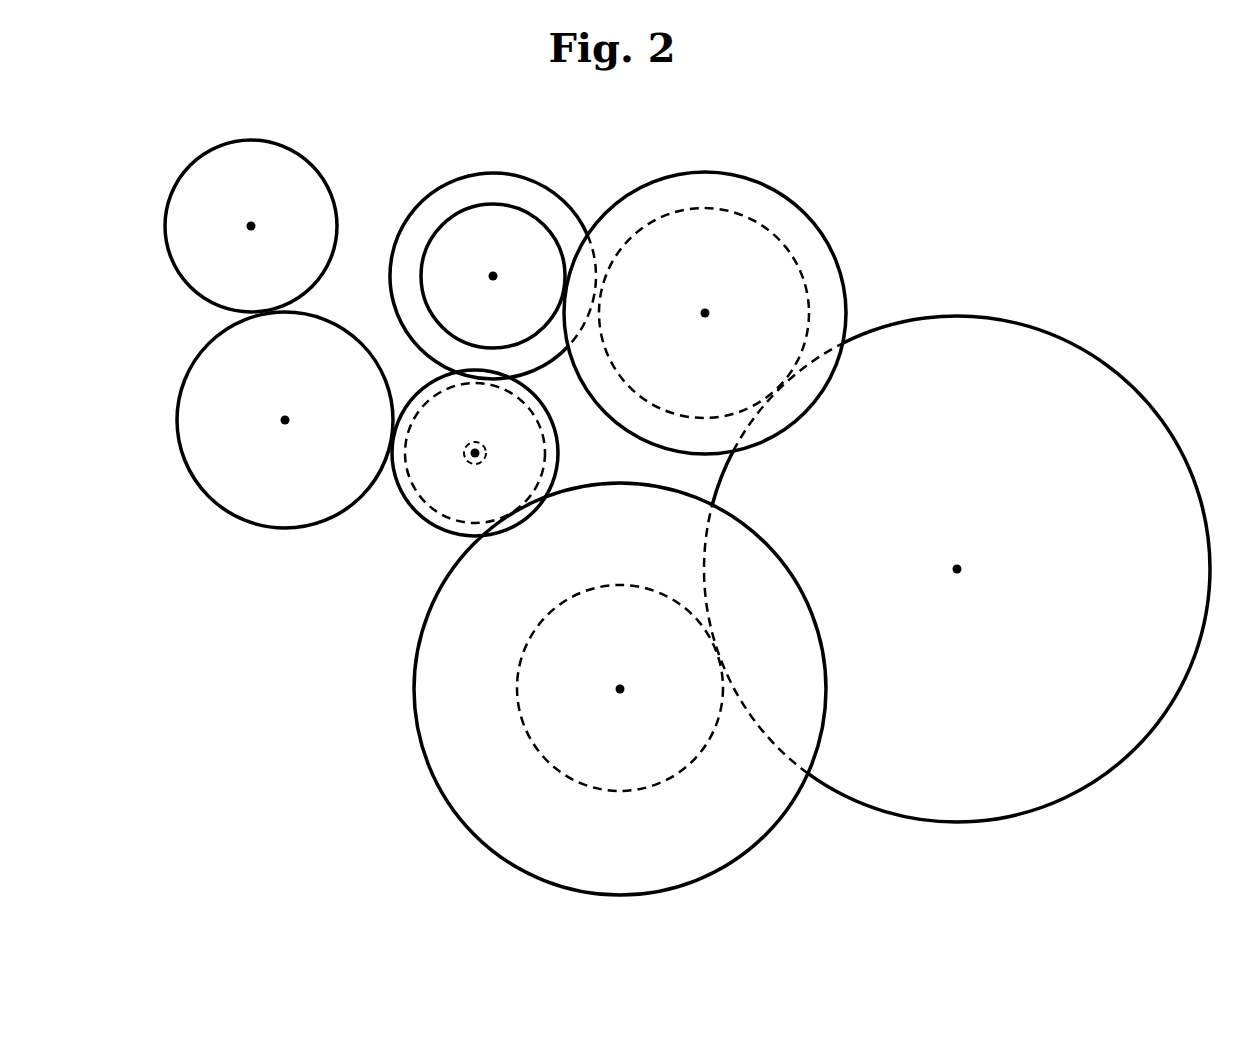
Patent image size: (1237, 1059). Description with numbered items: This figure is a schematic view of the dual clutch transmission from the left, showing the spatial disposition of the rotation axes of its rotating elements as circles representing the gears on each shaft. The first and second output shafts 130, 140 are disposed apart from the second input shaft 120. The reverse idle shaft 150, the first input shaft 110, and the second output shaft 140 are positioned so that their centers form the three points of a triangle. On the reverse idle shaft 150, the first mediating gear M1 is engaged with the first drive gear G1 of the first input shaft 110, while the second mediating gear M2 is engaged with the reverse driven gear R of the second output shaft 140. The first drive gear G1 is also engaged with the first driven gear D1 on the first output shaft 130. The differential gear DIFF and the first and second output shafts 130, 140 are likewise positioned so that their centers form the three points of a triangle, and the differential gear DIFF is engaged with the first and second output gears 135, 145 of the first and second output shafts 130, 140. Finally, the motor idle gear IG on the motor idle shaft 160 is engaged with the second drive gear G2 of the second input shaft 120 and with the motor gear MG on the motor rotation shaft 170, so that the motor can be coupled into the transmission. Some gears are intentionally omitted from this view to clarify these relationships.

The first input shaft 110 is at (384, 519).
The second input shaft 120 is at (467, 459).
The first output shaft 130 is at (551, 739).
The first output gear 135 is at (541, 759).
The second output shaft 140 is at (751, 293).
The second output gear 145 is at (760, 223).
The reverse idle shaft 150 is at (493, 276).
The motor idle shaft 160 is at (285, 420).
The motor rotation shaft 170 is at (251, 226).
The motor gear MG is at (226, 206).
The motor idle gear IG is at (260, 420).
The first mediating gear M1 is at (493, 257).
The second mediating gear M2 is at (502, 242).
The first drive gear G1 is at (414, 489).
The second drive gear G2 is at (420, 483).
The reverse driven gear R is at (734, 292).
The differential gear DIFF is at (988, 301).
The first driven gear D1 is at (597, 689).